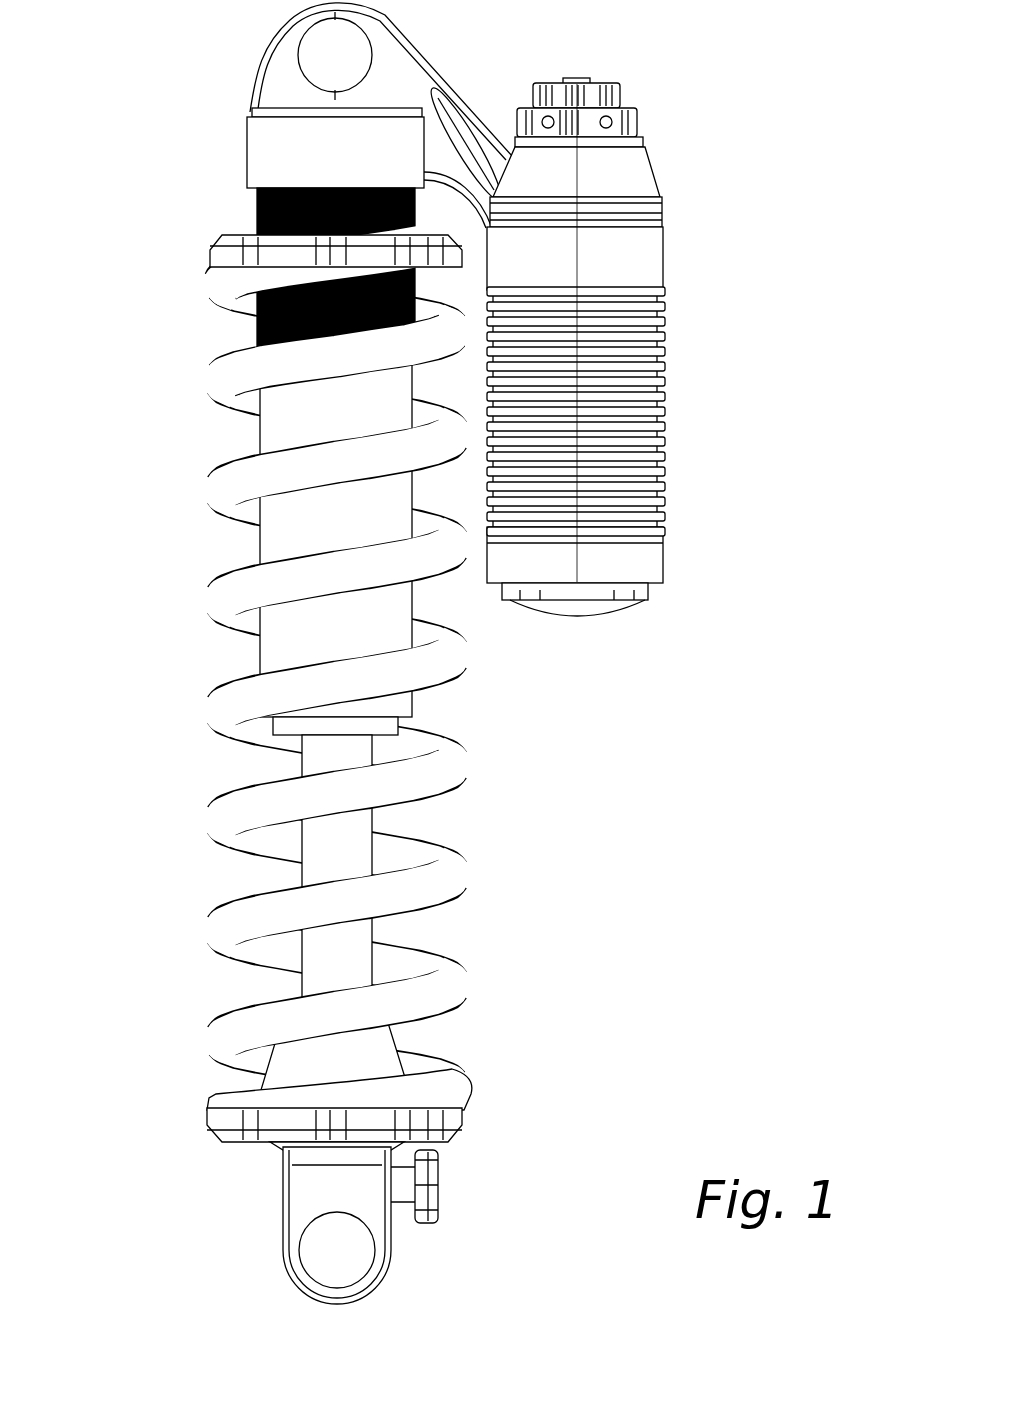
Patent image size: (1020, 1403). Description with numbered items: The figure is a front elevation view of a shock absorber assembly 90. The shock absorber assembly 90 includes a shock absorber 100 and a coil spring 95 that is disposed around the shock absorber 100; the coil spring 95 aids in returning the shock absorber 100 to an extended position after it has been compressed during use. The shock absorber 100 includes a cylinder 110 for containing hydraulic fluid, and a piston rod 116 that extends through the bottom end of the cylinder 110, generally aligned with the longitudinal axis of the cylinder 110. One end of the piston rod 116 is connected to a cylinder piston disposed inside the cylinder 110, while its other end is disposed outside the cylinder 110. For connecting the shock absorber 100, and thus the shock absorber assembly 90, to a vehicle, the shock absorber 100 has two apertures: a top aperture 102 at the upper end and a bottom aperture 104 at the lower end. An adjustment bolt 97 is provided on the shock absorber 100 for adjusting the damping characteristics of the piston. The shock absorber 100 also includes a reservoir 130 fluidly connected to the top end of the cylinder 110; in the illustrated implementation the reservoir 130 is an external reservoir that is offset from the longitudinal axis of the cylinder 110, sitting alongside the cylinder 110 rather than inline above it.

The shock absorber assembly 90 is at (122, 238).
The coil spring 95 is at (349, 649).
The adjustment bolt 97 is at (457, 1175).
The shock absorber 100 is at (661, 413).
The top aperture 102 is at (345, 55).
The bottom aperture 104 is at (333, 1262).
The cylinder 110 is at (300, 404).
The piston rod 116 is at (333, 850).
The reservoir 130 is at (608, 255).